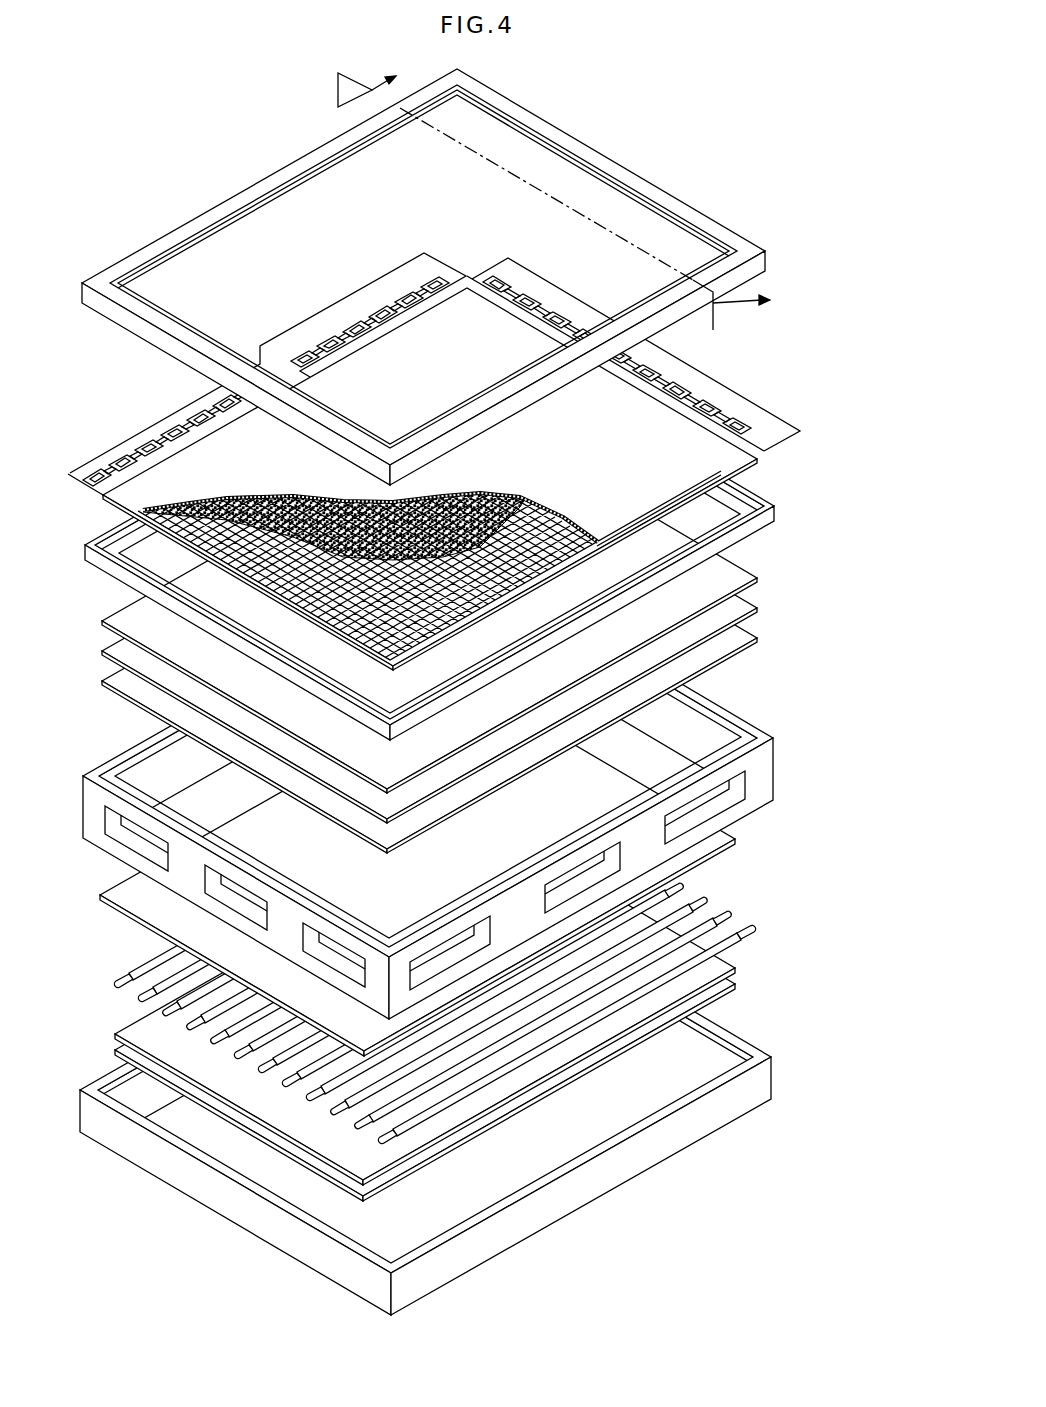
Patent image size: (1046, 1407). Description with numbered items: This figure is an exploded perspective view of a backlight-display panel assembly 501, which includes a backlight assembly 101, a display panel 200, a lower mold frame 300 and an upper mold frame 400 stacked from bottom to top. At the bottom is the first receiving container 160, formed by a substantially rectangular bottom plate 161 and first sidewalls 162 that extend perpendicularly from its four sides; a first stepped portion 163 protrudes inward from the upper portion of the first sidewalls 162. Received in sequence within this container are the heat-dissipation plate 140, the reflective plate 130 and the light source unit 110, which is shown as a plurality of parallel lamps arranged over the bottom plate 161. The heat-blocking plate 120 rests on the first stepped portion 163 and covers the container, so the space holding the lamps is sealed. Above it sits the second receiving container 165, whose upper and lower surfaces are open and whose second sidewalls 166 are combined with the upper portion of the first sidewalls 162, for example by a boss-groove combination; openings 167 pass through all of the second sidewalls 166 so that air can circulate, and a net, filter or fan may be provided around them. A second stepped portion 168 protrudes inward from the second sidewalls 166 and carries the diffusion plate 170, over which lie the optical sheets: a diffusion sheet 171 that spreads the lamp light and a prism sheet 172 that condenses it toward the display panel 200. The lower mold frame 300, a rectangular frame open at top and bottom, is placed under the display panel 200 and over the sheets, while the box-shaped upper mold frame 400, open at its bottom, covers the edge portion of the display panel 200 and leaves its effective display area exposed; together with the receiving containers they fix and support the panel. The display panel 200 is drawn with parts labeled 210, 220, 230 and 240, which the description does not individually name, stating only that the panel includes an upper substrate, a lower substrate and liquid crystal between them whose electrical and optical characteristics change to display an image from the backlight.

The backlight assembly 101 is at (484, 862).
The light source unit 110 is at (740, 912).
The heat-blocking plate 120 is at (738, 842).
The reflective plate 130 is at (725, 964).
The heat-dissipation plate 140 is at (727, 995).
The first receiving container 160 is at (457, 1094).
The bottom plate 161 is at (647, 1143).
The first sidewalls 162 is at (713, 1040).
The first stepped portion 163 is at (650, 1080).
The second receiving container 165 is at (466, 788).
The second sidewalls 166 is at (735, 718).
The openings 167 is at (762, 734).
The second stepped portion 168 is at (690, 706).
The diffusion plate 170 is at (757, 638).
The diffusion sheet 171 is at (757, 608).
The prism sheet 172 is at (468, 601).
The display panel 200 is at (445, 437).
The first substrate 210 is at (310, 622).
The second substrate 220 is at (703, 452).
The liquid crystal layer 230 is at (500, 494).
The driving circuit board 240 is at (440, 254).
The lower mold frame 300 is at (467, 533).
The upper mold frame 400 is at (211, 190).
The backlight-display panel assembly 501 is at (608, 86).